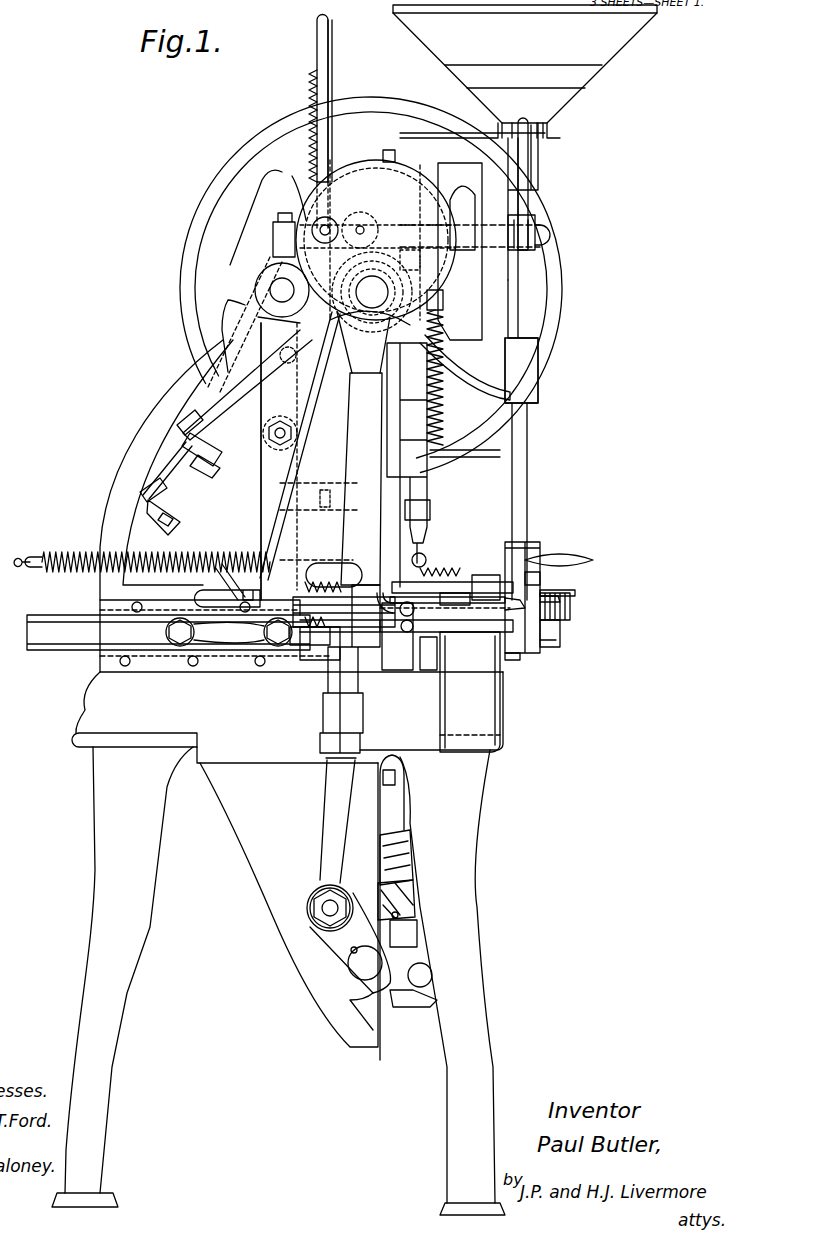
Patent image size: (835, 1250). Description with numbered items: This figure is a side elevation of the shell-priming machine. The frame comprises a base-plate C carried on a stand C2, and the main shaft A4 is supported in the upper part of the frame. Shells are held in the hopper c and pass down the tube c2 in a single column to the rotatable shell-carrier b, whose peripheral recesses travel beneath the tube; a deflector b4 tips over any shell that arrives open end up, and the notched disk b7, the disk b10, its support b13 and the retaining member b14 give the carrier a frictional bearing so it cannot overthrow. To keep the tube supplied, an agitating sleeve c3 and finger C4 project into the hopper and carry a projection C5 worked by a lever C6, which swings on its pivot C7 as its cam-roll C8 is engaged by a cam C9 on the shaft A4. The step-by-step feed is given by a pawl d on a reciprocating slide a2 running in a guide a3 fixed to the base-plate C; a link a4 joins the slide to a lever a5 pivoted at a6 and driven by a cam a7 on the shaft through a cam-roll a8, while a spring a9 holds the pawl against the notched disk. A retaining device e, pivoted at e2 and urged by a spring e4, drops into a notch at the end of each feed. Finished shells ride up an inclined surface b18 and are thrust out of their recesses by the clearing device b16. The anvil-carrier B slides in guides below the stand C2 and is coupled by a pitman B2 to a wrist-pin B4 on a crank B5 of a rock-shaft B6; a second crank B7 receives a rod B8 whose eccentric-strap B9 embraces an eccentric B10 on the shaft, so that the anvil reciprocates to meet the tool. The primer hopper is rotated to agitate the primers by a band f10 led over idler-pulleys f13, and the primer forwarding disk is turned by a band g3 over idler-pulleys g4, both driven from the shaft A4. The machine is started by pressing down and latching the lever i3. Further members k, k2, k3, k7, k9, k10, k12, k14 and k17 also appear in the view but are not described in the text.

The hopper c is at (525, 64).
The finger C4 is at (525, 160).
The projection C5 is at (530, 232).
The lever C6 is at (548, 240).
The tube c2 is at (520, 485).
The sleeve c3 is at (530, 330).
The main shaft A4 is at (371, 285).
The pivot C7 is at (330, 225).
The cam-roll C8 is at (363, 218).
The cam C9 is at (408, 250).
The eccentric-strap B9 is at (360, 172).
The eccentric B10 is at (357, 175).
The cam-roll a8 is at (255, 290).
The cam a7 is at (300, 323).
The lever rod k10 is at (225, 420).
The pivot k12 is at (280, 358).
The idler-pulleys f13 is at (180, 434).
The band f10 is at (198, 460).
The pivot a6 is at (268, 440).
The lever a5 is at (261, 470).
The band g3 is at (318, 405).
The plunger bar k is at (412, 545).
The spring k2 is at (428, 502).
The arm k3 is at (440, 455).
The stud k7 is at (425, 535).
The block k14 is at (325, 490).
The slide k9 is at (320, 565).
The idler-pulleys g4 is at (205, 556).
The slide a2 is at (168, 632).
The guide a3 is at (118, 665).
The link a4 is at (220, 646).
The spring a9 is at (312, 645).
The base-plate C is at (289, 824).
The stand C2 is at (92, 747).
The box k17 is at (493, 722).
The retaining device e is at (470, 578).
The spring e4 is at (455, 593).
The pivot e2 is at (490, 575).
The pawl d is at (440, 633).
The shell-carrier b is at (572, 603).
The deflector b4 is at (570, 590).
The lever i3 is at (575, 558).
The retaining member b14 is at (512, 600).
The disk b7 is at (540, 580).
The clearing device b16 is at (542, 598).
The disk b10 is at (560, 627).
The support b13 is at (556, 642).
The inclined surface b18 is at (515, 660).
The rod B8 is at (335, 805).
The crank B7 is at (330, 952).
The rock-shaft B6 is at (360, 975).
The anvil-carrier B is at (393, 813).
The pitman B2 is at (412, 872).
The wrist-pin B4 is at (430, 980).
The crank B5 is at (410, 1007).